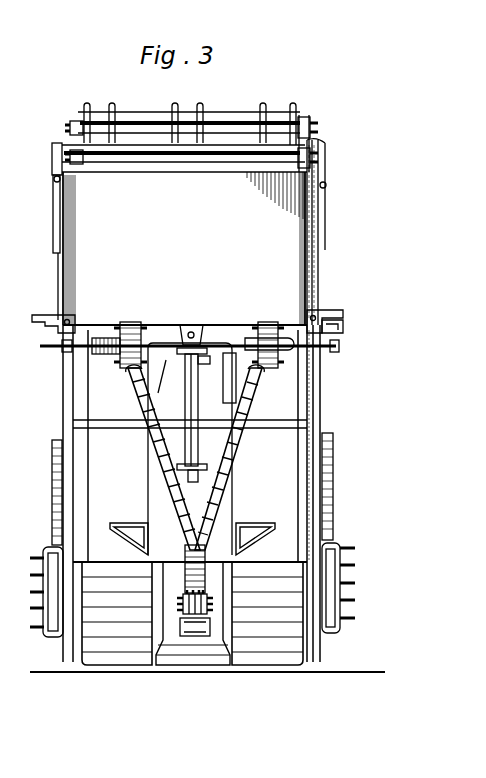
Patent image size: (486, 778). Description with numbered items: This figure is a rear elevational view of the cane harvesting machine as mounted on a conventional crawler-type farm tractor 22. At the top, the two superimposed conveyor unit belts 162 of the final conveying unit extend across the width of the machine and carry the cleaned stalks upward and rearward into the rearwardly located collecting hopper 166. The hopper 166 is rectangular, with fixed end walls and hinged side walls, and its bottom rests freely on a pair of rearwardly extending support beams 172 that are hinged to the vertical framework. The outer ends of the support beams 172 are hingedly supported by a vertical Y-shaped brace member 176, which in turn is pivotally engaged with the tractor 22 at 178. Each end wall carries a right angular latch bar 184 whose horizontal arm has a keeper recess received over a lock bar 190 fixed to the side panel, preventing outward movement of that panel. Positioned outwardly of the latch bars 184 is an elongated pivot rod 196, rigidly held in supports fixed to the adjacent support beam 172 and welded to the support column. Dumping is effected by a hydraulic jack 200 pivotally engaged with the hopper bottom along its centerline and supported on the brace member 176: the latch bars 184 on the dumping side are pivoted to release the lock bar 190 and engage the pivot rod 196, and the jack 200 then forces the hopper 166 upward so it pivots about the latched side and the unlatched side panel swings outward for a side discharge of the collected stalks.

The conveyor unit belts 162 is at (314, 112).
The collecting hopper 166 is at (328, 267).
The latch bar 184 is at (332, 308).
The lock bar 190 is at (341, 326).
The pivot rod 196 is at (336, 350).
The support beams 172 is at (135, 327).
The crawler-type farm tractor 22 is at (311, 514).
The hydraulic jack 200 is at (210, 438).
The Y-shaped brace member 176 is at (212, 490).
The pivotal engagement with tractor 178 is at (211, 605).